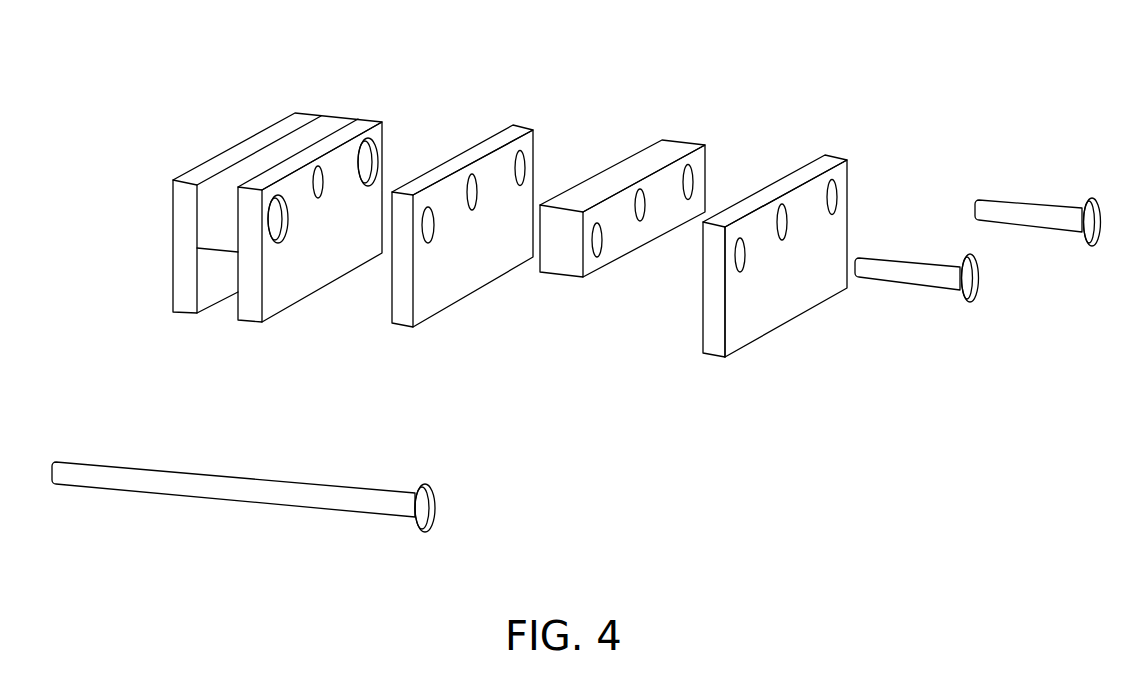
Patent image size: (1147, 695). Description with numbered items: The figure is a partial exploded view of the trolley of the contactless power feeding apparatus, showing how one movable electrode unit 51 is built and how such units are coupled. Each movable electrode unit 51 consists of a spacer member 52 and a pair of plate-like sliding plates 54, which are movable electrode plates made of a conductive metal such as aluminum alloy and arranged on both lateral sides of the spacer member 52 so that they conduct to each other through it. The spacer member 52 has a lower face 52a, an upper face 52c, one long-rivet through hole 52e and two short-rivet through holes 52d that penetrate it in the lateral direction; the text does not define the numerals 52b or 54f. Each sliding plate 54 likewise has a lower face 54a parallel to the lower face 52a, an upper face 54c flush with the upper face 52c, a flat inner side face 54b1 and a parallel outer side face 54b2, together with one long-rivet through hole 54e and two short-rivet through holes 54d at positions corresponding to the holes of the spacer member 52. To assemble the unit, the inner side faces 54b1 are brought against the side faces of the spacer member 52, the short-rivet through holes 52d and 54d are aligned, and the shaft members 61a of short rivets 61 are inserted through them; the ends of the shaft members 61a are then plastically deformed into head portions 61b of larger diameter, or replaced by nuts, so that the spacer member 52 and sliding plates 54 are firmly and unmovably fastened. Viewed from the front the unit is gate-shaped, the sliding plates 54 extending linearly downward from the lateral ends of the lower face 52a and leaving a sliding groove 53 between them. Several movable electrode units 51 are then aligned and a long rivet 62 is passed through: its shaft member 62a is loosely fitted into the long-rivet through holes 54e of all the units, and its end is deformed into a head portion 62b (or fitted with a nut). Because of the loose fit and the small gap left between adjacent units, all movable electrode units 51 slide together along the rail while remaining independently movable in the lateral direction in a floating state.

The movable electrode unit 51 is at (277, 202).
The spacer member 52 is at (535, 199).
The lower face of the spacer member 52a is at (552, 276).
The hole of block 52b is at (610, 253).
The upper face of the spacer member 52c is at (630, 160).
The short-rivet through hole 52d is at (708, 170).
The long-rivet through hole 52e is at (645, 208).
The sliding groove 53 is at (223, 312).
The sliding plate 54 is at (649, 244).
The lower face of the sliding plate 54a is at (712, 356).
The inner side face of the sliding plate 54b1 is at (425, 297).
The outer side face of the sliding plate 54b2 is at (765, 325).
The upper face of the sliding plate 54c is at (838, 155).
The short-rivet through hole 54d is at (833, 198).
The long-rivet through hole 54e is at (317, 170).
The end surface of plate 54f is at (713, 334).
The short rivet 61 is at (703, 236).
The shaft member of the short rivet 61a is at (1005, 198).
The head portion of the short rivet 61b is at (1097, 208).
The long rivet 62 is at (281, 496).
The shaft member of the long rivet 62a is at (240, 490).
The head portion of the long rivet 62b is at (428, 510).